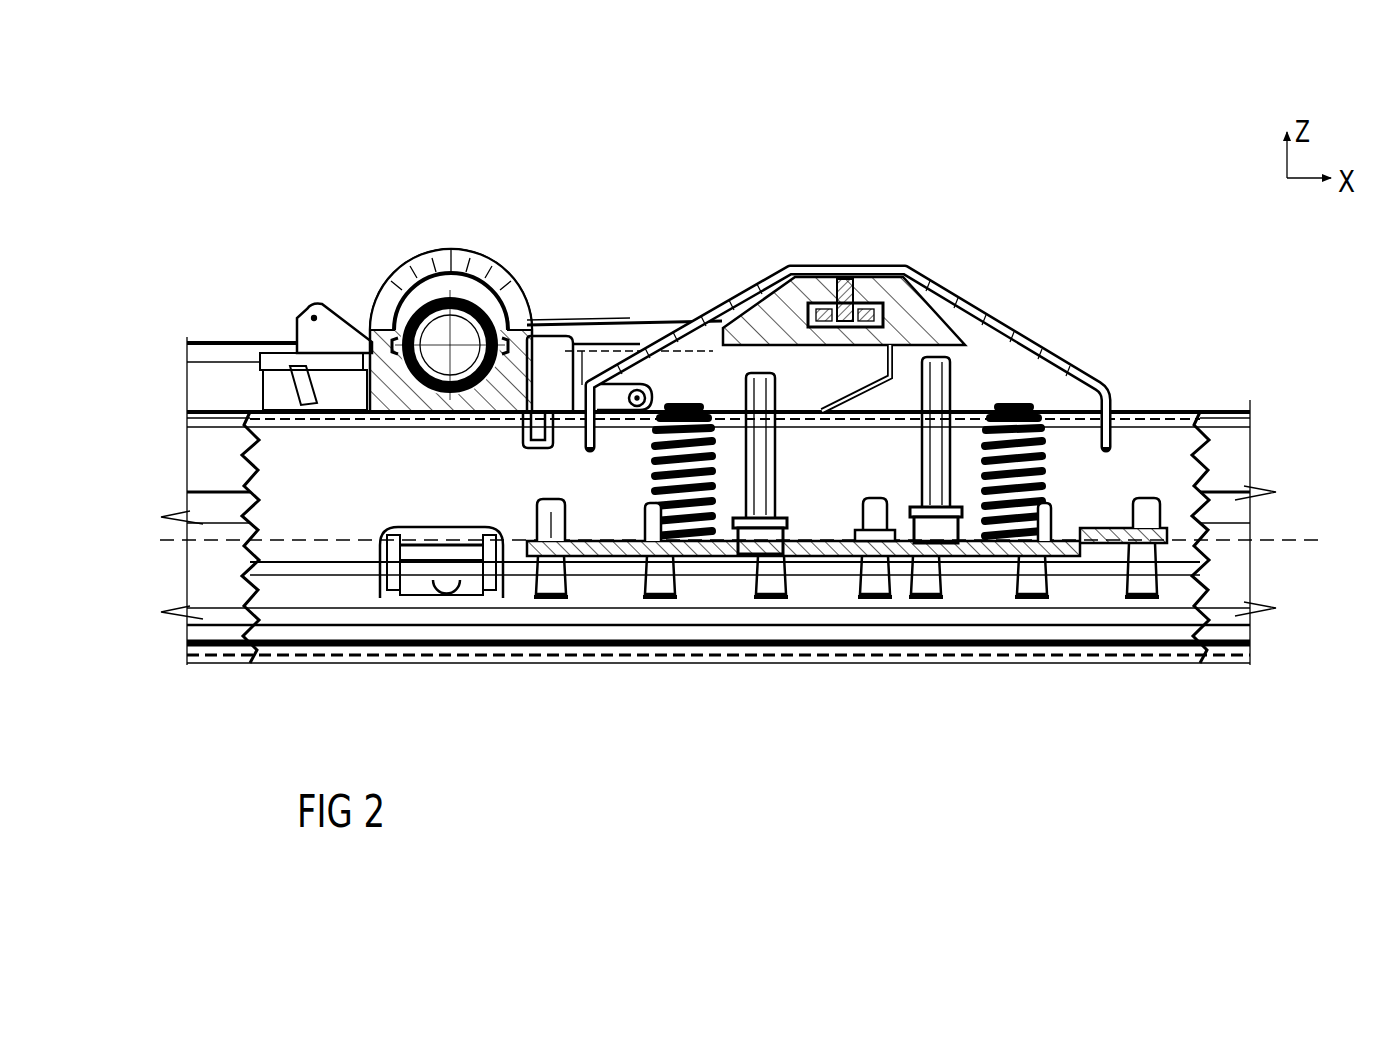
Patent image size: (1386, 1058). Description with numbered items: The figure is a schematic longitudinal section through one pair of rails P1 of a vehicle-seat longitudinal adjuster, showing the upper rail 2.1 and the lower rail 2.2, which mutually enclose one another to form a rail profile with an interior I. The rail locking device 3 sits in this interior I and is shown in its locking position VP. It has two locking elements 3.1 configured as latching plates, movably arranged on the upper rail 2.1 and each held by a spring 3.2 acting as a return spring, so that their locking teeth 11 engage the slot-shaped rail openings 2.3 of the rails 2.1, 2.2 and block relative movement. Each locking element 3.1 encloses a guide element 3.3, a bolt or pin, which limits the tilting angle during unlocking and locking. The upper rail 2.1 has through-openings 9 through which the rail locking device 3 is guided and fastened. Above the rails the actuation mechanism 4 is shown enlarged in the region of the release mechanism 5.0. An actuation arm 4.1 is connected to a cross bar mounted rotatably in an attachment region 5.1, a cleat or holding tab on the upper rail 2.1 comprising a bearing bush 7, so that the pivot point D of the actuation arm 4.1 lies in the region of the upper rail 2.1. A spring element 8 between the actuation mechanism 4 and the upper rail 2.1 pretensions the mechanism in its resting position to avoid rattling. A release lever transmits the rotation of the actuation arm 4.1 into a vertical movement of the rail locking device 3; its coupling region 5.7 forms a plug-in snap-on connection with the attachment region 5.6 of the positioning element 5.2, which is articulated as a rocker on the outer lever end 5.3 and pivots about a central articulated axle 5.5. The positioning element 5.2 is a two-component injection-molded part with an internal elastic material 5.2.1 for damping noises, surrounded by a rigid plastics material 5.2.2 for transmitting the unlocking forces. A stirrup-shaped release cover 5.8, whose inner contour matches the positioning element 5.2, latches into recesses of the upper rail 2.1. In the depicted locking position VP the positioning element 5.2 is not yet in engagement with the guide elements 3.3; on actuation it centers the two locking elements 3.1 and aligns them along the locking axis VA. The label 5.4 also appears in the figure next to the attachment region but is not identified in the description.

The upper rail 2.1 is at (1188, 411).
The lower rail 2.2 is at (385, 663).
The rail openings 2.3 is at (548, 602).
The rail locking device 3 is at (822, 578).
The locking element 3.1 is at (600, 558).
The spring 3.2 is at (657, 478).
The guide element 3.3 is at (753, 373).
The actuation mechanism 4 is at (208, 376).
The actuation arm 4.1 is at (220, 360).
The release mechanism 5.0 is at (912, 228).
The attachment region 5.1 is at (443, 287).
The positioning element 5.2 is at (977, 320).
The internal elastic material 5.2.1 is at (797, 268).
The rigid plastics material 5.2.2 is at (917, 277).
The outer lever end 5.3 is at (572, 325).
The bearing housing 5.4 is at (490, 287).
The articulated axle 5.5 is at (850, 277).
The attachment region 5.6 is at (822, 302).
The coupling region 5.7 is at (733, 290).
The release cover 5.8 is at (1033, 347).
The bearing bush 7 is at (460, 297).
The spring element 8 is at (427, 267).
The through-openings 9 is at (660, 405).
The locking teeth 11 is at (545, 605).
The pivot point D is at (448, 343).
The interior I is at (304, 582).
The pair of rails P1 is at (1150, 216).
The locking axis VA is at (740, 524).
The locking position VP is at (1284, 373).